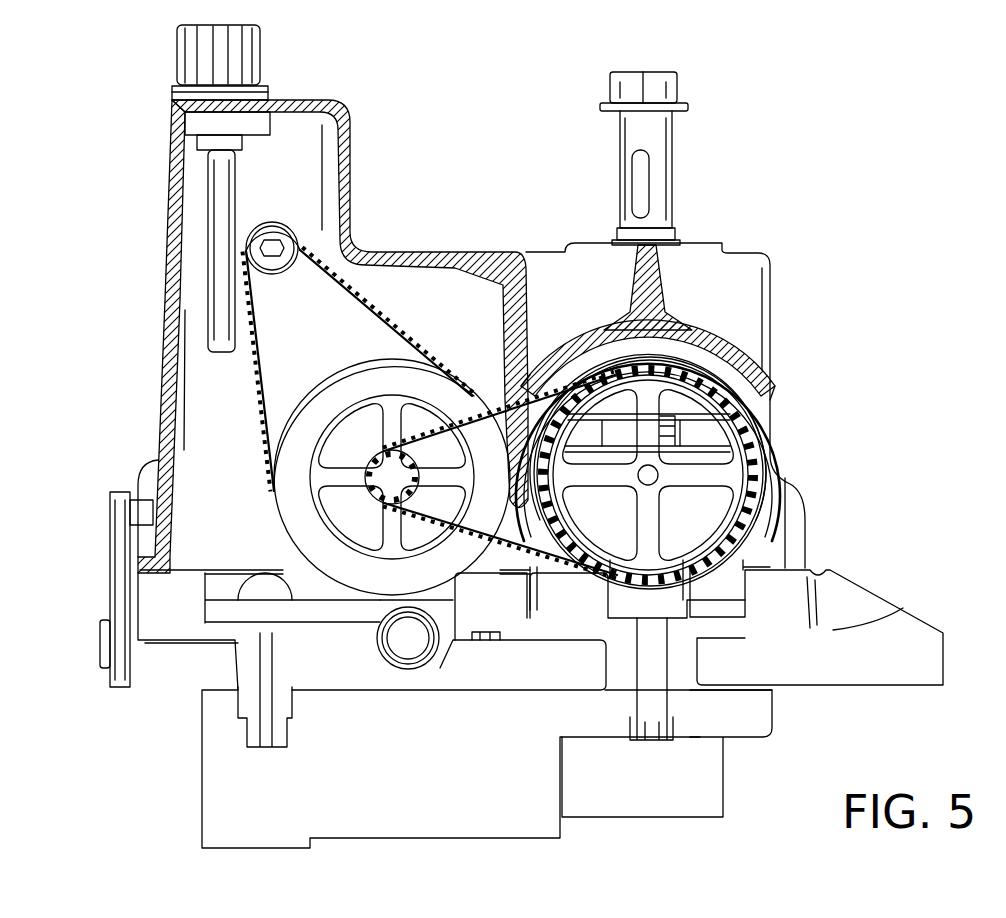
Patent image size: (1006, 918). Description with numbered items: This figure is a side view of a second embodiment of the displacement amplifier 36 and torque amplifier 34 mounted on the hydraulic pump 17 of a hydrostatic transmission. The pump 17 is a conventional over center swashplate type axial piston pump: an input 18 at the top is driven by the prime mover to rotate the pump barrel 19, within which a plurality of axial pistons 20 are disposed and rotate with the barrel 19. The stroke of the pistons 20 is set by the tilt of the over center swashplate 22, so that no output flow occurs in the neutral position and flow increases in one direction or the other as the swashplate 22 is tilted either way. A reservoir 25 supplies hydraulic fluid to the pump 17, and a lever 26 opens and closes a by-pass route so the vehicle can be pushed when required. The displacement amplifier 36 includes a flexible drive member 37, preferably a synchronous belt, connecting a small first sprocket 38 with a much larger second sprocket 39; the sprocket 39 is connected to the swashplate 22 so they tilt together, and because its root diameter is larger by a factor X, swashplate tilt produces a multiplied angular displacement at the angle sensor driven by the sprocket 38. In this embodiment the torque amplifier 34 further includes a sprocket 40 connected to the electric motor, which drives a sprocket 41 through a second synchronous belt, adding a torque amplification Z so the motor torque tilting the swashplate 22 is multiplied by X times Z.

The hydraulic pump 17 is at (772, 287).
The input 18 is at (673, 150).
The pump barrel 19 is at (713, 490).
The axial pistons 20 is at (710, 437).
The swashplate 22 is at (678, 398).
The reservoir 25 is at (208, 425).
The lever 26 is at (118, 548).
The torque amplifier 34 is at (405, 332).
The displacement amplifier 36 is at (498, 402).
The flexible drive member 37 is at (490, 540).
The first sprocket 38 is at (398, 490).
The second sprocket 39 is at (750, 518).
The sprocket 40 is at (272, 232).
The sprocket 41 is at (292, 525).